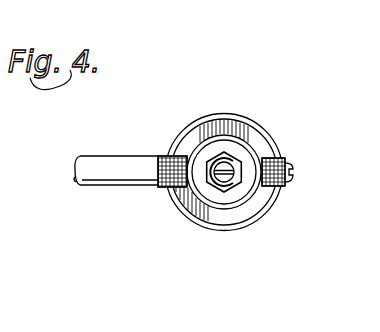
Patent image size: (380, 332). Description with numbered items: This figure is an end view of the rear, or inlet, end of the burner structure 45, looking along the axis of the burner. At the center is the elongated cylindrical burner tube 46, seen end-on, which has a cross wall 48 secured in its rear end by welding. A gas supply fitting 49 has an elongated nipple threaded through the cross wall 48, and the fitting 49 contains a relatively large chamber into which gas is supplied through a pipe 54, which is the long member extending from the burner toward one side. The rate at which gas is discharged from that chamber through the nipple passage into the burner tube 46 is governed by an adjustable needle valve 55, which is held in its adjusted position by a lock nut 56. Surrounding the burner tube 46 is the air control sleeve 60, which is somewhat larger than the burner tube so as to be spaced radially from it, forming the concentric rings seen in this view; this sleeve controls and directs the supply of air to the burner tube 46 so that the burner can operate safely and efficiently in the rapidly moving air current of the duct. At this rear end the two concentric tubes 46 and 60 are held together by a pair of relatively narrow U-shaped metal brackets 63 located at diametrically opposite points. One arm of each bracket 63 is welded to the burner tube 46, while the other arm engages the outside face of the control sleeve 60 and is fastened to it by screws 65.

The burner structure 45 is at (259, 113).
The burner tube 46 is at (247, 167).
The cross wall 48 is at (229, 183).
The gas supply fitting 49 is at (258, 157).
The pipe 54 is at (103, 178).
The adjustable needle valve 55 is at (222, 187).
The lock nut 56 is at (234, 190).
The air control sleeve 60 is at (203, 120).
The brackets 63 is at (273, 195).
The screws 65 is at (153, 183).